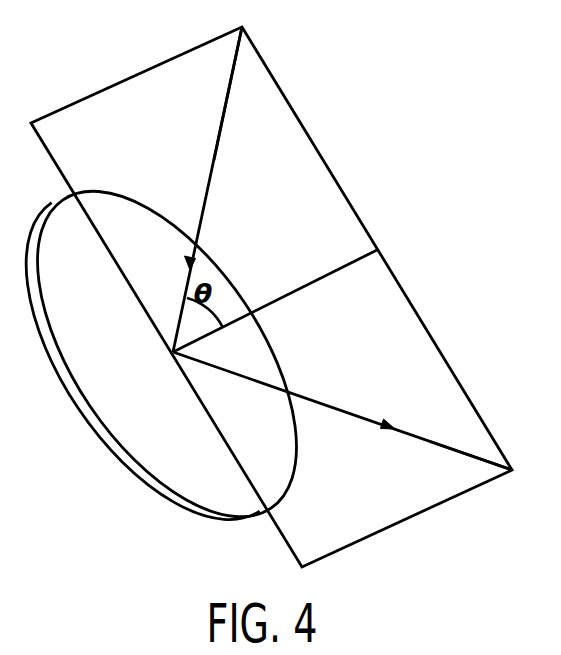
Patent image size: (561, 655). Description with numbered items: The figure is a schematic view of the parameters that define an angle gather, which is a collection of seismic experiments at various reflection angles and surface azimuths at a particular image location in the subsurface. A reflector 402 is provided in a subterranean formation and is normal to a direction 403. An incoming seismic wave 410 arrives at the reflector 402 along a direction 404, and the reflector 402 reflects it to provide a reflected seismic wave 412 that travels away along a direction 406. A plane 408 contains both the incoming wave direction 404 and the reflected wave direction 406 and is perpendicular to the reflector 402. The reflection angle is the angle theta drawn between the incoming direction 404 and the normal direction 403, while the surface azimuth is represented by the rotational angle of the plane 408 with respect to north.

The reflector 402 is at (188, 500).
The direction 403 is at (298, 290).
The direction 404 is at (197, 240).
The direction 406 is at (368, 420).
The plane 408 is at (138, 74).
The incoming seismic wave 410 is at (207, 187).
The reflected seismic wave 412 is at (452, 450).